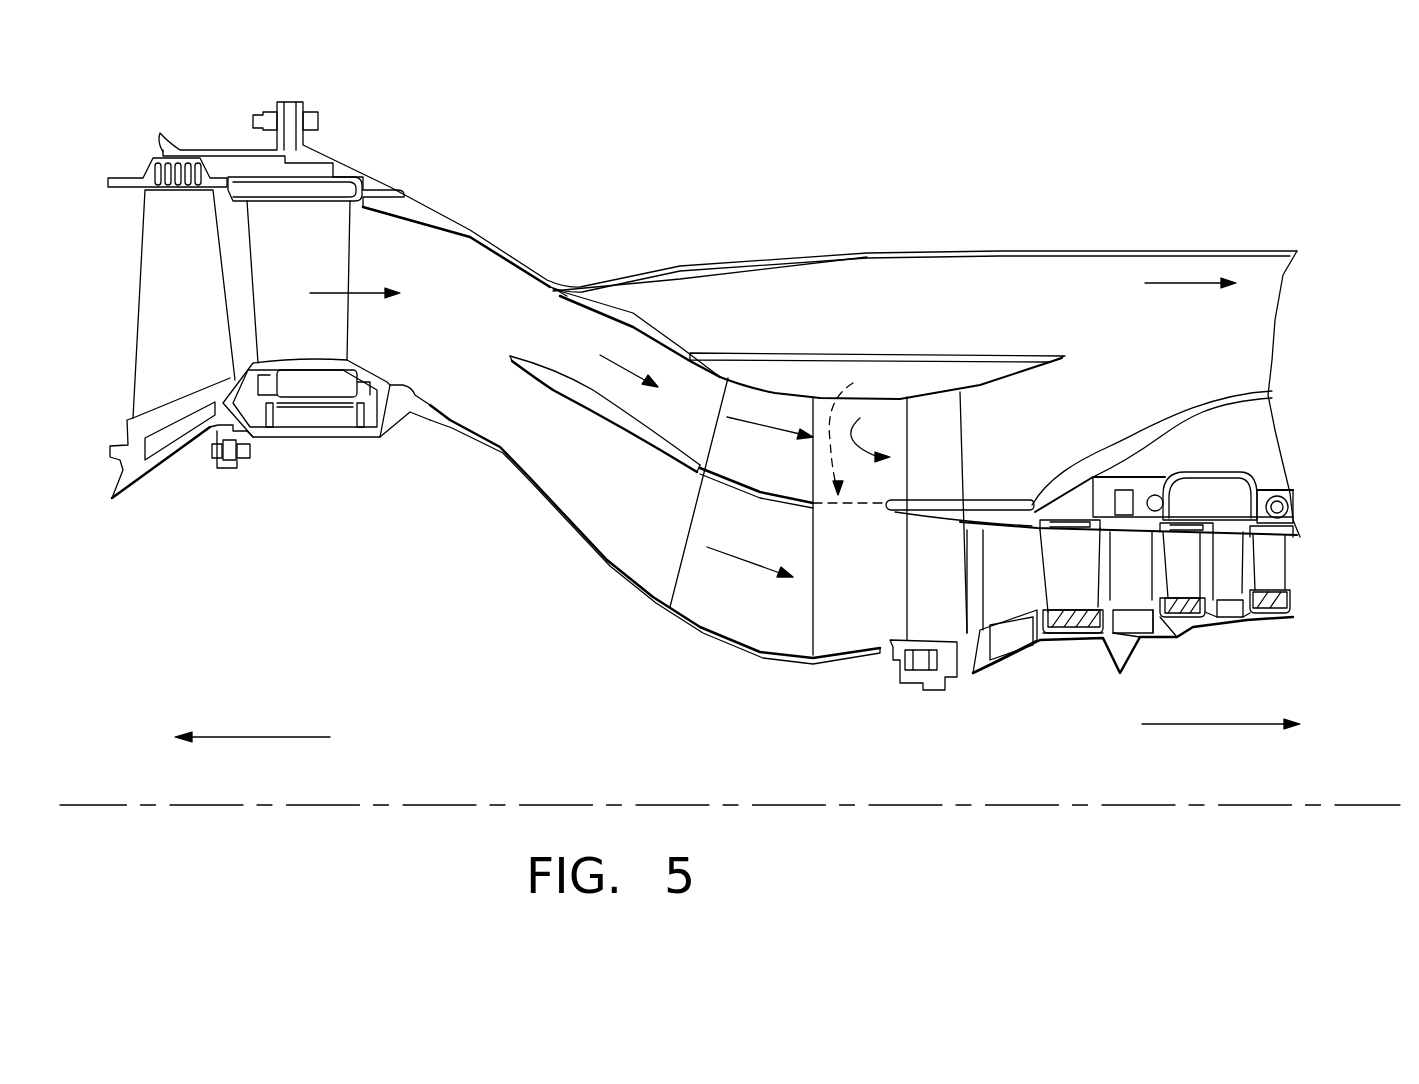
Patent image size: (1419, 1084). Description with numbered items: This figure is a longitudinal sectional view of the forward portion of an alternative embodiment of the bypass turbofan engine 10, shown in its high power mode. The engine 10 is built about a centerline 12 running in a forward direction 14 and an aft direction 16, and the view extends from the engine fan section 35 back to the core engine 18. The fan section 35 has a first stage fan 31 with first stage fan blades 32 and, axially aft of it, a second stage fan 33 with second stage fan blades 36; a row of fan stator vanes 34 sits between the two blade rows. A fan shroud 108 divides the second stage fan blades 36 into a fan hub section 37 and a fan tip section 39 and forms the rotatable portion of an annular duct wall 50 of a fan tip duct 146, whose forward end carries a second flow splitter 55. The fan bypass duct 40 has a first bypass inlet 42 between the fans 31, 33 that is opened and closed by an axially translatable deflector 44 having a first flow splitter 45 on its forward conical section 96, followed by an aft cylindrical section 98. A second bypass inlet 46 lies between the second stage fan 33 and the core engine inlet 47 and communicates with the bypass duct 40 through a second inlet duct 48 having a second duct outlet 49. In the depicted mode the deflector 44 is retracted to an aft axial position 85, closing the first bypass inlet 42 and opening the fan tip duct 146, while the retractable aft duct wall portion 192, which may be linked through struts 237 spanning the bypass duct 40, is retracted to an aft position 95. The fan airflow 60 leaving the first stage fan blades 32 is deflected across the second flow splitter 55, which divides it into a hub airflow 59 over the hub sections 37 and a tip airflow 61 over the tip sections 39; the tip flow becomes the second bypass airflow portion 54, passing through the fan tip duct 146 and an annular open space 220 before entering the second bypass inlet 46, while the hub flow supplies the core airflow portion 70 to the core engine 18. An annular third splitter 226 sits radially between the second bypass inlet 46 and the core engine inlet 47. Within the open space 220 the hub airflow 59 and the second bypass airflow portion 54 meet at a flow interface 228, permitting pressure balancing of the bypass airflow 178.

The bypass turbofan engine 10 is at (886, 136).
The centerline 12 is at (967, 805).
The forward direction 14 is at (280, 737).
The aft direction 16 is at (1225, 724).
The core engine 18 is at (1308, 484).
The first stage fan 31 is at (182, 470).
The first stage fan blades 32 is at (198, 328).
The second stage fan 33 is at (713, 647).
The fan stator vanes 34 is at (316, 243).
The engine fan section 35 is at (497, 200).
The second stage fan blades 36 is at (690, 517).
The fan hub section 37 is at (712, 598).
The fan tip section 39 is at (773, 400).
The fan bypass duct 40 is at (1260, 280).
The first bypass inlet 42 is at (660, 300).
The deflector 44 is at (813, 353).
The first flow splitter 45 is at (555, 291).
The second bypass inlet 46 is at (871, 429).
The core engine inlet 47 is at (925, 610).
The second inlet duct 48 is at (1037, 433).
The second duct outlet 49 is at (1113, 397).
The annular duct wall 50 is at (869, 522).
The second bypass airflow portion 54 is at (653, 300).
The second flow splitter 55 is at (517, 382).
The hub airflow 59 is at (720, 547).
The fan airflow 60 is at (360, 295).
The tip airflow 61 is at (747, 420).
The core airflow portion 70 is at (612, 513).
The aft axial position 85 is at (605, 280).
The aft position 95 is at (1038, 477).
The forward conical section 96 is at (620, 317).
The aft cylindrical section 98 is at (950, 353).
The fan shroud 108 is at (727, 470).
The fan tip duct 146 is at (710, 397).
The bypass airflow 178 is at (1173, 283).
The retractable aft duct wall portion 192 is at (945, 517).
The annular open space 220 is at (843, 517).
The annular third splitter 226 is at (936, 486).
The flow interface 228 is at (842, 387).
The struts 237 is at (958, 433).